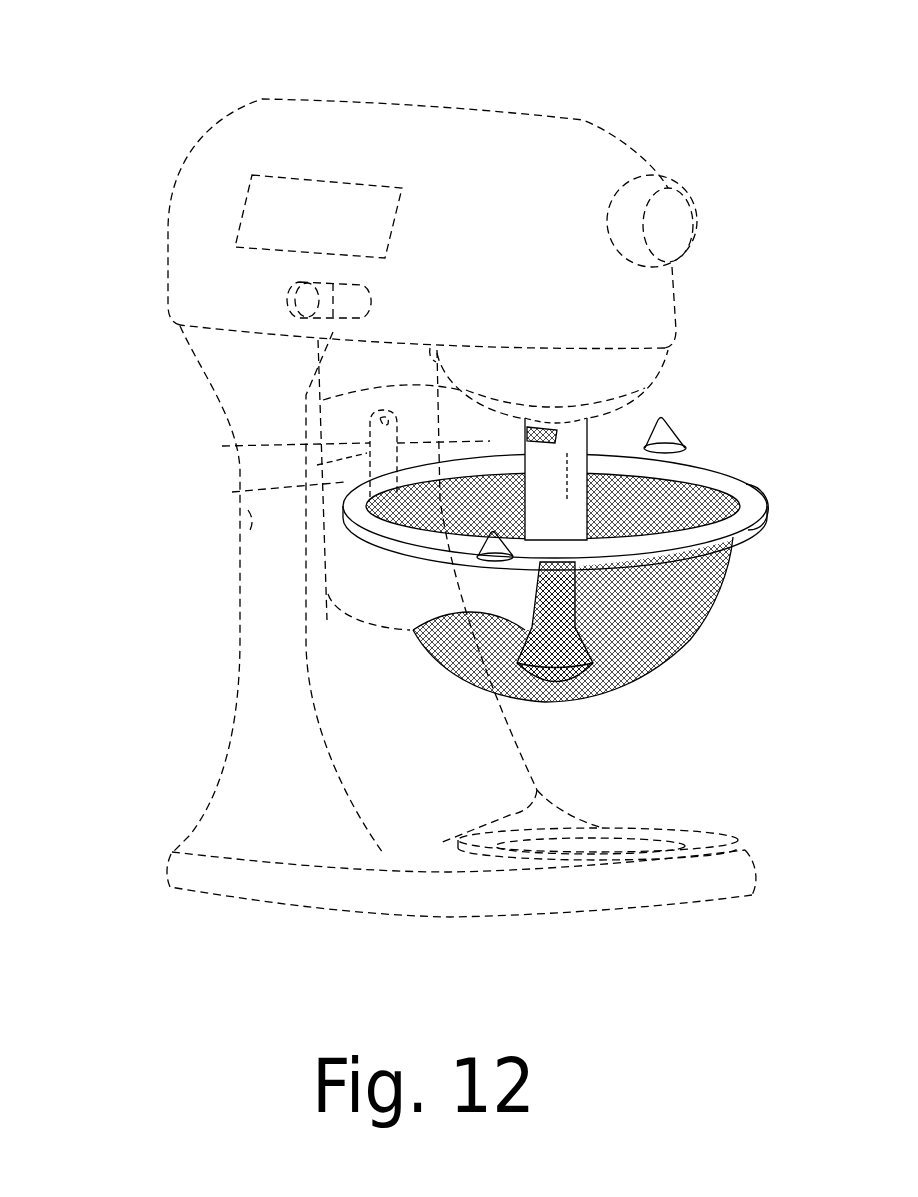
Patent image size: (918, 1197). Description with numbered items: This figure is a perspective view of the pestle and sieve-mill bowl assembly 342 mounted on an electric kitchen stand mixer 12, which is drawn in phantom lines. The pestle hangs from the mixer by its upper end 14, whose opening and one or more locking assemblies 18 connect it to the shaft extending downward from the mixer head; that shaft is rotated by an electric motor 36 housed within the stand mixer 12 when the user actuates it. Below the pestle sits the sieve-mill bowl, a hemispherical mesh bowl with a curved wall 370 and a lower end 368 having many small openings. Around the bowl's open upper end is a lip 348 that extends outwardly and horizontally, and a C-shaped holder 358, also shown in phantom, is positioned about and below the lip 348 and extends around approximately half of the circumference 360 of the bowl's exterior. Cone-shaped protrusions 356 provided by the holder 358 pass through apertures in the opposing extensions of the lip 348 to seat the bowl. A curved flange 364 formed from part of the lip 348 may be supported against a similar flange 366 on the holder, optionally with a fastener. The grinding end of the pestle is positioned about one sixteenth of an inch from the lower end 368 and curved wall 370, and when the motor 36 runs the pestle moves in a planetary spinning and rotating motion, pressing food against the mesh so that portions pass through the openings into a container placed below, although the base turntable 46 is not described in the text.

The electric kitchen stand mixer 12 is at (577, 165).
The upper end 14 is at (580, 433).
The locking assemblies 18 is at (525, 437).
The electric motor 36 is at (394, 224).
The base turntable 46 is at (697, 838).
The pestle and sieve-mill bowl assembly 342 is at (189, 408).
The lip 348 is at (747, 515).
The cone-shaped protrusion 356 is at (690, 442).
The C-shaped holder 358 is at (328, 594).
The circumference 360 is at (733, 572).
The curved flange 364 is at (293, 443).
The flange 366 is at (367, 453).
The lower end 368 is at (580, 702).
The curved wall 370 is at (700, 627).